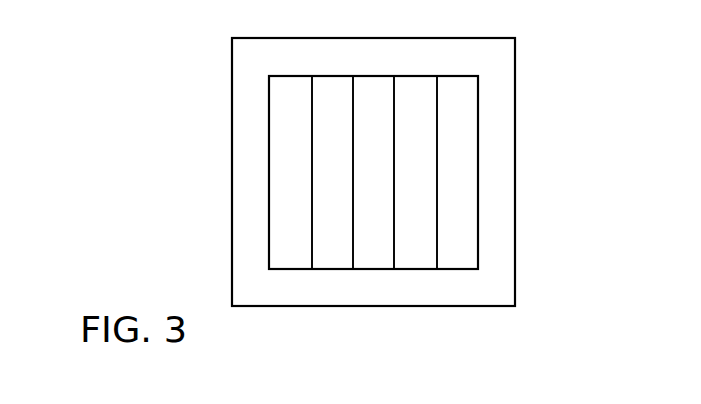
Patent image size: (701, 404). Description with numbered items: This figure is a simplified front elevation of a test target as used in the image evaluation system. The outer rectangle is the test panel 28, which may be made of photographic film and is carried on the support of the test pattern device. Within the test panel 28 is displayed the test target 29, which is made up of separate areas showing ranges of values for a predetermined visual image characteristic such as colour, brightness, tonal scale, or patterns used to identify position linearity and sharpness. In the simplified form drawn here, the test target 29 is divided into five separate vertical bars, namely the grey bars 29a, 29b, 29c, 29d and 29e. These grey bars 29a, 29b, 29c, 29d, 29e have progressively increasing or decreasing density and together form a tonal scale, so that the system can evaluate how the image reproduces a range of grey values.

The test panel 28 is at (253, 207).
The test target 29 is at (383, 135).
The grey bar 29a is at (290, 230).
The grey bar 29b is at (328, 230).
The grey bar 29c is at (368, 235).
The grey bar 29d is at (408, 228).
The grey bar 29e is at (453, 228).